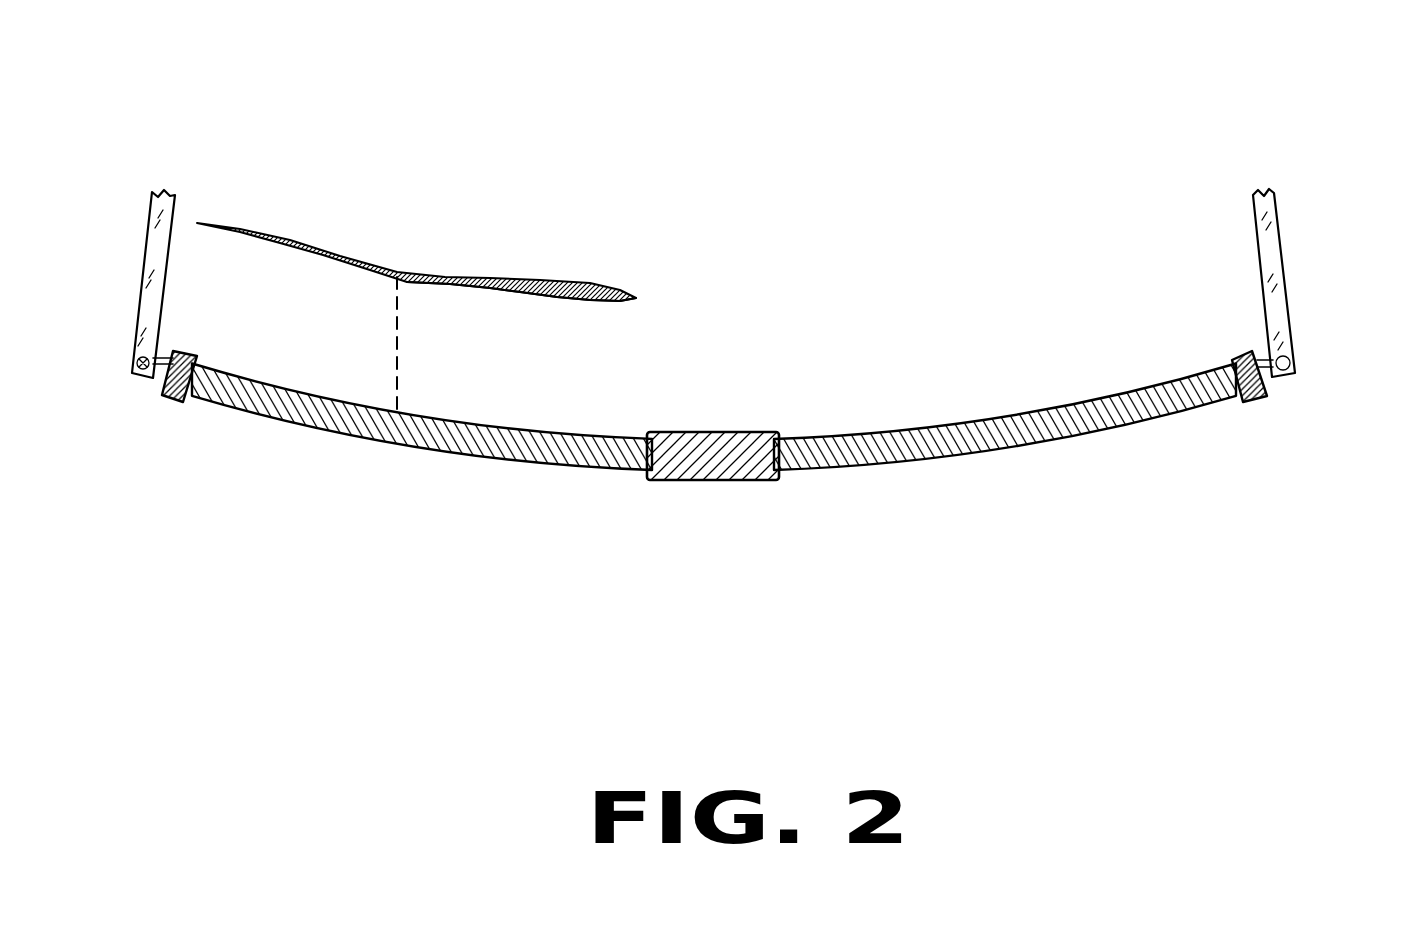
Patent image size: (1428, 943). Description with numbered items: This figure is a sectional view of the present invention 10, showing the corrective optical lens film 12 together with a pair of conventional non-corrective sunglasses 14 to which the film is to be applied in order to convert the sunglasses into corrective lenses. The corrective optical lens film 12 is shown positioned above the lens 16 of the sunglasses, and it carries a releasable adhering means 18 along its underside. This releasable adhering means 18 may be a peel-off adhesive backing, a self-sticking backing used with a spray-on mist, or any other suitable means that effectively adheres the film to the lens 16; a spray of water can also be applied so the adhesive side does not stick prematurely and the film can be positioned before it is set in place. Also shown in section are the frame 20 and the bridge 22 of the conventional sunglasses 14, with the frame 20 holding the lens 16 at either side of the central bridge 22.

The present invention 10 is at (641, 213).
The corrective optical lens film 12 is at (483, 275).
The conventional non-corrective sunglasses 14 is at (1283, 186).
The lens 16 is at (428, 445).
The releasable adhering means 18 is at (543, 298).
The frame 20 is at (1257, 398).
The bridge 22 is at (747, 450).